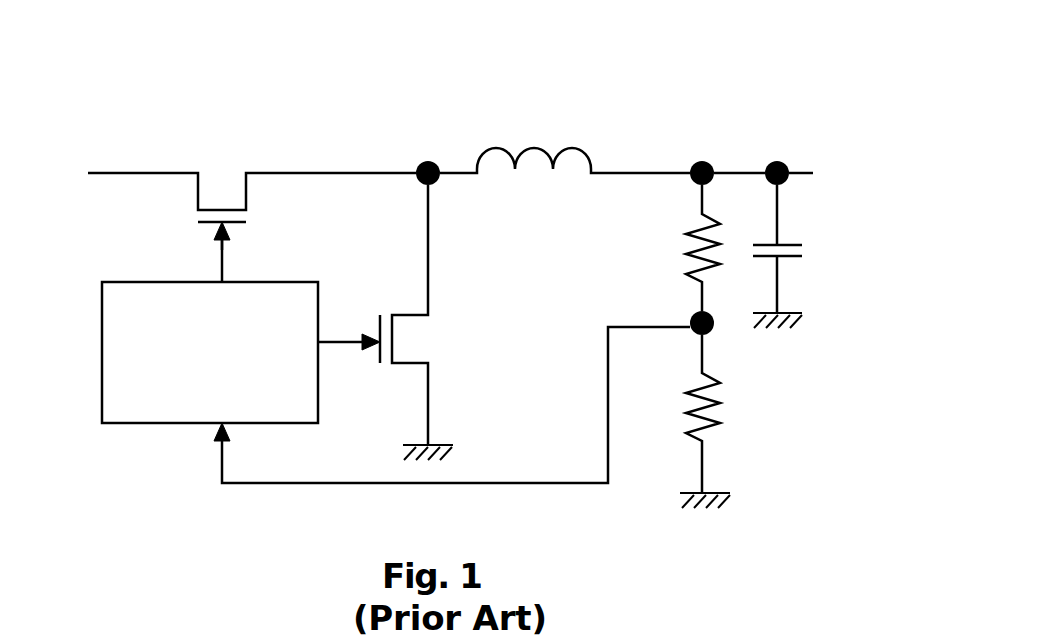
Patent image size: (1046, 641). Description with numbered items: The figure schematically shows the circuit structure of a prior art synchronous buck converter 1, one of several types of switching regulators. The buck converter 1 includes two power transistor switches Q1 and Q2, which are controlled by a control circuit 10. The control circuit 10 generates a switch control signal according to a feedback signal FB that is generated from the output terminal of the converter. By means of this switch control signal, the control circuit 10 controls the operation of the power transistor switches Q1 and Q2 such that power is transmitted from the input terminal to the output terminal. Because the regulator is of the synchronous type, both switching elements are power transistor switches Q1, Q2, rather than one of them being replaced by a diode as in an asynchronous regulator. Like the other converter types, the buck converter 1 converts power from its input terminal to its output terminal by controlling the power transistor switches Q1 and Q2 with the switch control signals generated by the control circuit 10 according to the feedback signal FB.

The buck converter 1 is at (677, 92).
The control circuit 10 is at (226, 391).
The power transistor switch Q1 is at (222, 194).
The power transistor switch Q2 is at (391, 322).
The feedback signal FB is at (683, 346).